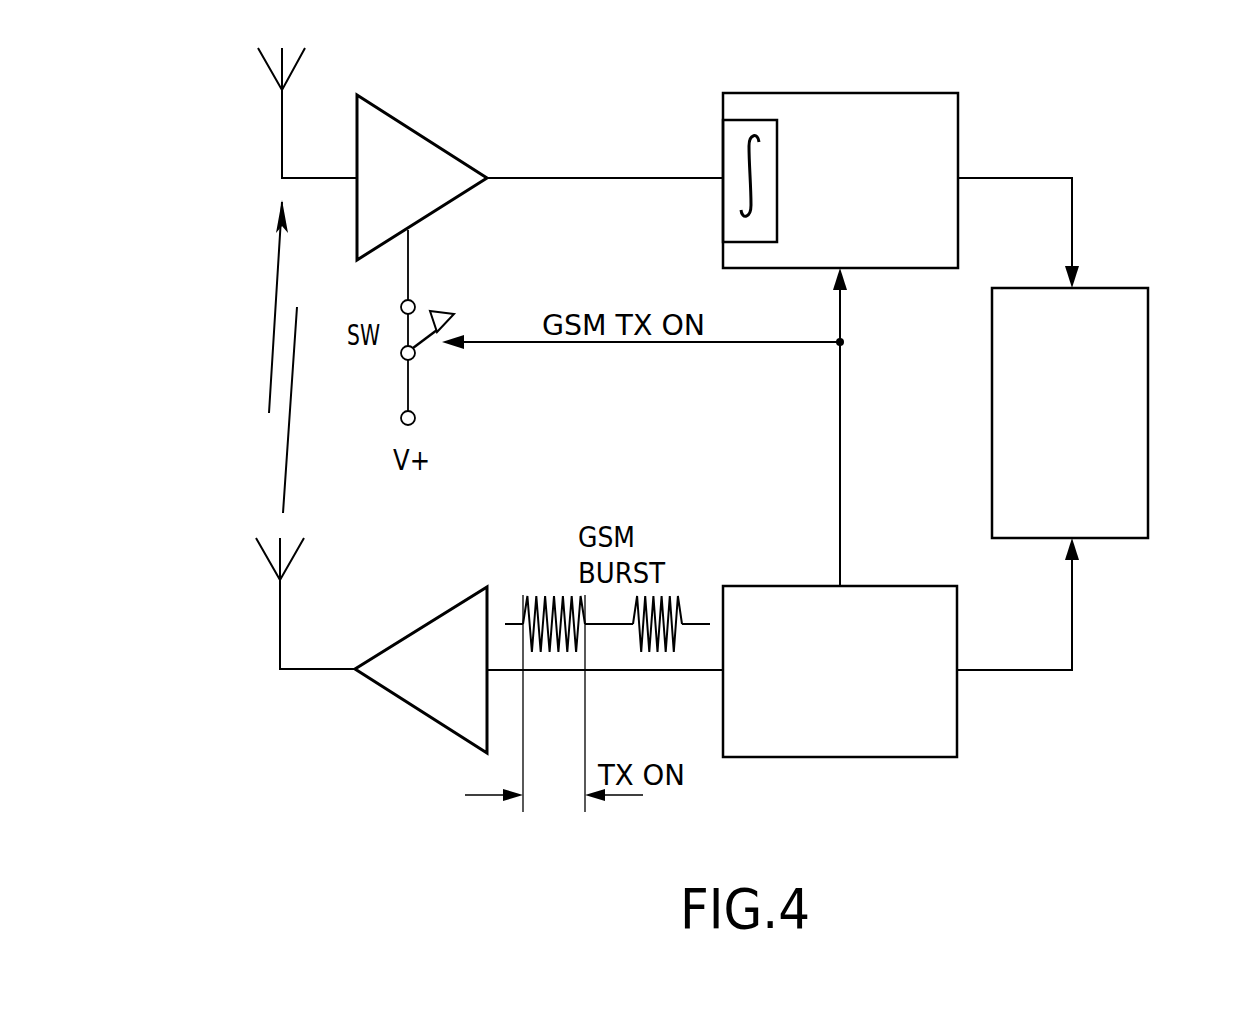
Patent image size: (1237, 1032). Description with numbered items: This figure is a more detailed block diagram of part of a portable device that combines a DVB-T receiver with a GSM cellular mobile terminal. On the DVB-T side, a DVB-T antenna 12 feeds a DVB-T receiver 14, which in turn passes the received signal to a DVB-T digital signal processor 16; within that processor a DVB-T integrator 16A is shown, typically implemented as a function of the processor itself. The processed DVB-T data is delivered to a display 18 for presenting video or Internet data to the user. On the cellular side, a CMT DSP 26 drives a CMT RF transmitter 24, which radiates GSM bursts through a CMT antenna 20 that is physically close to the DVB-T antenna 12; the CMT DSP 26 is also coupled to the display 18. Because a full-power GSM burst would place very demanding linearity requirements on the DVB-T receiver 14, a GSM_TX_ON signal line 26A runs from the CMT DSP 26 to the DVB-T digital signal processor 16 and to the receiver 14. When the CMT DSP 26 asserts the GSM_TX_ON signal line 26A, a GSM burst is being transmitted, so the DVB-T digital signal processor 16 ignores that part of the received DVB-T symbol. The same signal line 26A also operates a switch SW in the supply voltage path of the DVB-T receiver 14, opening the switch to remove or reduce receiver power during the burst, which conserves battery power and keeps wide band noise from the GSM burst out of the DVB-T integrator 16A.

The DVB-T antenna 12 is at (280, 137).
The DVB-T receiver 14 is at (413, 130).
The DVB-T digital signal processor 16 is at (840, 93).
The DVB-T integrator 16A is at (723, 152).
The display 18 is at (1148, 410).
The CMT antenna 20 is at (280, 632).
The CMT RF transmitter 24 is at (423, 710).
The CMT DSP 26 is at (840, 757).
The GSM_TX_ON signal line 26A is at (838, 350).